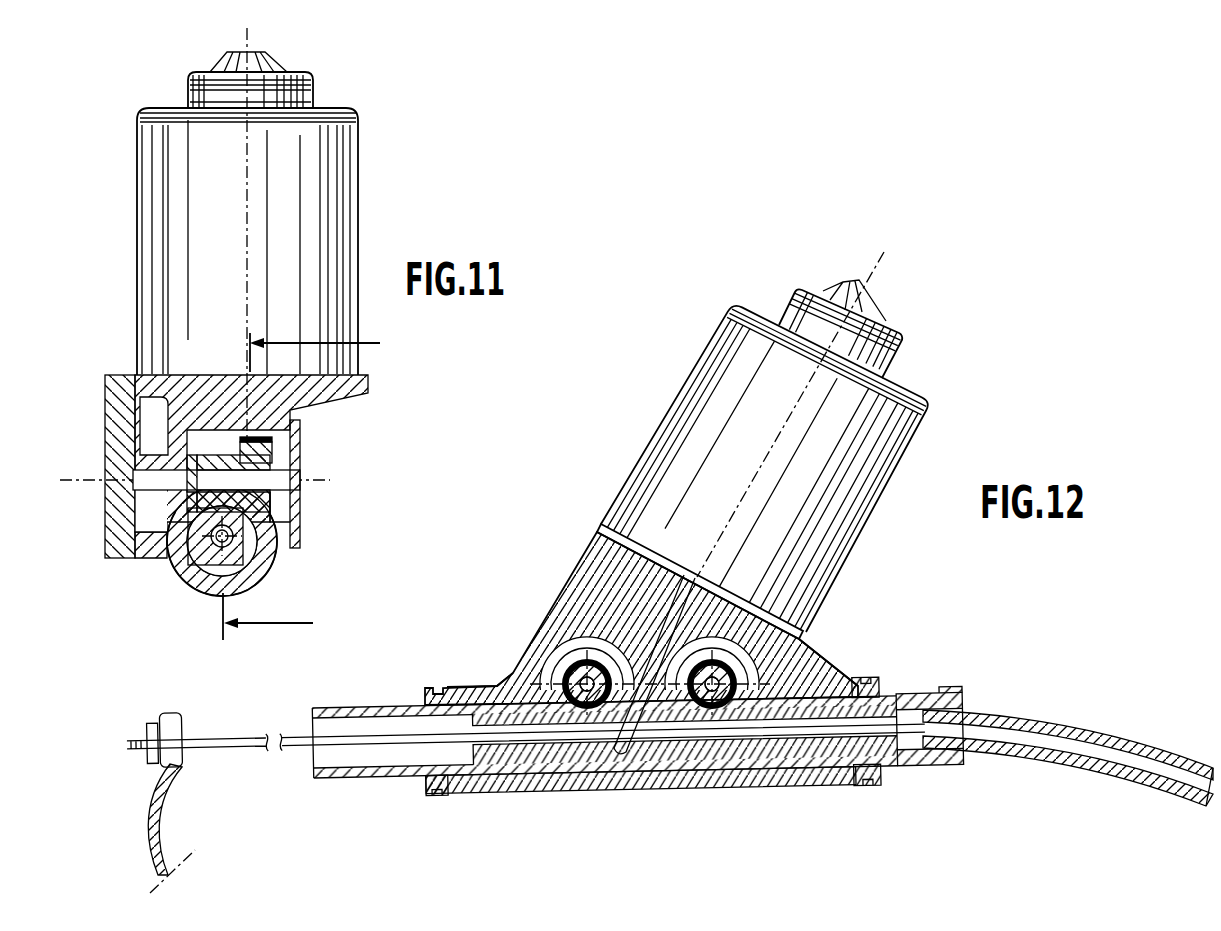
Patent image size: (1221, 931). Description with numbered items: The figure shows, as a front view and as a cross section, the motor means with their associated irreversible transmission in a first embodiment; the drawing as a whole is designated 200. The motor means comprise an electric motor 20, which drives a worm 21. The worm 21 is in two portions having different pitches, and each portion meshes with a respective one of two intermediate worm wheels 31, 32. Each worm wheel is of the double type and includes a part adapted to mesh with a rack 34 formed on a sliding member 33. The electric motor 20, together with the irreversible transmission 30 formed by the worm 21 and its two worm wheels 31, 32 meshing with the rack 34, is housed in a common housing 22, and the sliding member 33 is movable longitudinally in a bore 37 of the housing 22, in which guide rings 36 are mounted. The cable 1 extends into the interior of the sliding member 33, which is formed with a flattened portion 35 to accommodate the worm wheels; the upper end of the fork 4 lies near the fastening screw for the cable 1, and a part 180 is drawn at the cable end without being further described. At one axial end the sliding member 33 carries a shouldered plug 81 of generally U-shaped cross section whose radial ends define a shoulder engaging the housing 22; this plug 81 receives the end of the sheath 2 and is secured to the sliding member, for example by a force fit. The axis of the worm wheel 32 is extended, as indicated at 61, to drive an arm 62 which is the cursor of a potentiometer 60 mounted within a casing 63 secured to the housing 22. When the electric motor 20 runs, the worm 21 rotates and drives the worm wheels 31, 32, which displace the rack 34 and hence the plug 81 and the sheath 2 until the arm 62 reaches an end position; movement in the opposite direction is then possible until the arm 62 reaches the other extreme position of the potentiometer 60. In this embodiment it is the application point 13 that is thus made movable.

In FIG. 11, the motor drive assembly 200 is at (128, 251).
In FIG. 12, the motor drive assembly 200 is at (900, 474).
In FIG. 11, the electric motor 20 is at (370, 252).
In FIG. 12, the electric motor 20 is at (712, 315).
In FIG. 11, the potentiometer 60 is at (119, 355).
In FIG. 11, the casing 63 is at (105, 428).
In FIG. 11, the arm 62 is at (110, 458).
In FIG. 11, the extended axis of the worm wheel 61 is at (148, 503).
In FIG. 11, the worm wheel 32 is at (274, 445).
In FIG. 12, the worm wheel 32 is at (778, 652).
In FIG. 11, the sliding member 33 is at (180, 563).
In FIG. 12, the sliding member 33 is at (350, 778).
In FIG. 11, the flattened portion 35 is at (250, 542).
In FIG. 11, the cable 1 is at (308, 480).
In FIG. 12, the cable 1 is at (226, 723).
In FIG. 12, the irreversible transmission 30 is at (918, 668).
In FIG. 12, the housing 22 is at (848, 651).
In FIG. 12, the rack 34 is at (508, 692).
In FIG. 12, the worm wheel 31 is at (575, 672).
In FIG. 12, the worm 21 is at (675, 625).
In FIG. 12, the guide rings 36 is at (425, 786).
In FIG. 12, the bore 37 is at (478, 766).
In FIG. 12, the application point 13 is at (962, 768).
In FIG. 12, the shouldered plug 81 is at (968, 690).
In FIG. 12, the sheath 2 is at (1083, 712).
In FIG. 12, the cable end fitting 180 is at (152, 773).
In FIG. 12, the fork 4 is at (176, 820).